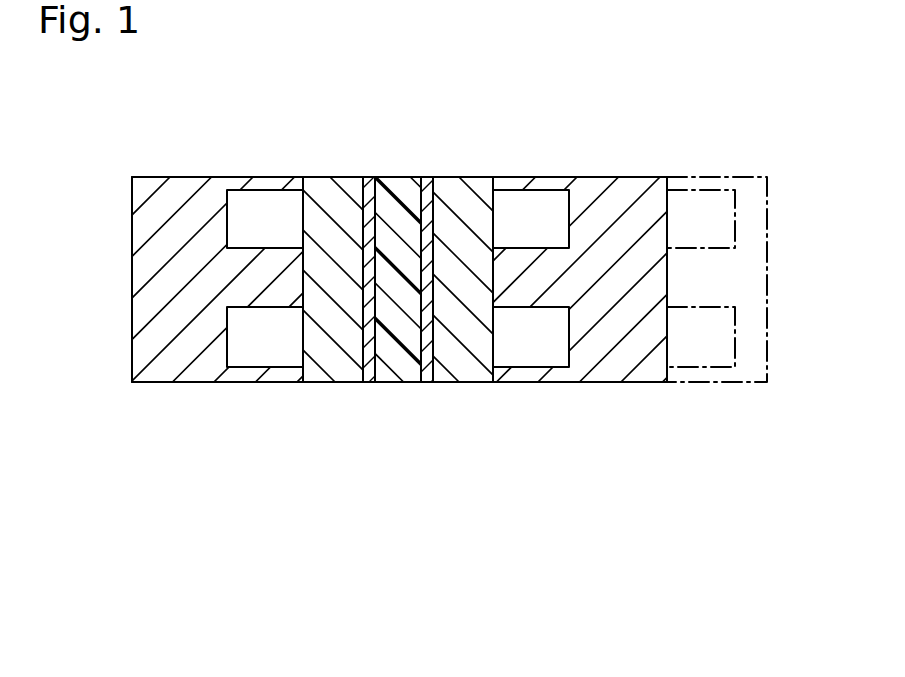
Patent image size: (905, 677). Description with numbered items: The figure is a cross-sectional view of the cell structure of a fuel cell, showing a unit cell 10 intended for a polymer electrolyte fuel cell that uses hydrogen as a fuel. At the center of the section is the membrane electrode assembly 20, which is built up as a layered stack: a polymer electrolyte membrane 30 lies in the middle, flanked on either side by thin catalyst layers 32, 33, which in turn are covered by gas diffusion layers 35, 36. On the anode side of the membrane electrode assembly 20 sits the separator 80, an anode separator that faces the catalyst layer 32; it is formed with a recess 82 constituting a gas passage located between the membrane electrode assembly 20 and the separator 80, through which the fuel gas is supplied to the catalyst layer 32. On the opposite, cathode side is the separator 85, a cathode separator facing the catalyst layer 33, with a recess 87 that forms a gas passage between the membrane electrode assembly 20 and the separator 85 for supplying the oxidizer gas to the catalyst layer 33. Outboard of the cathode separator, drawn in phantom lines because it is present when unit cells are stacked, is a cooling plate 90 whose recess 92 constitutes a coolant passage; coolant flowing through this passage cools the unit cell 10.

The unit cell 10 is at (185, 122).
The membrane electrode assembly 20 is at (552, 120).
The polymer electrolyte membrane 30 is at (393, 177).
The catalyst layer 32 is at (363, 221).
The catalyst layer 33 is at (432, 200).
The gas diffusion layer 35 is at (313, 177).
The gas diffusion layer 36 is at (470, 177).
The separator 80 is at (213, 382).
The recess 82 is at (228, 340).
The separator 85 is at (610, 382).
The recess 87 is at (568, 338).
The cooling plate 90 is at (740, 382).
The recess 92 is at (733, 333).